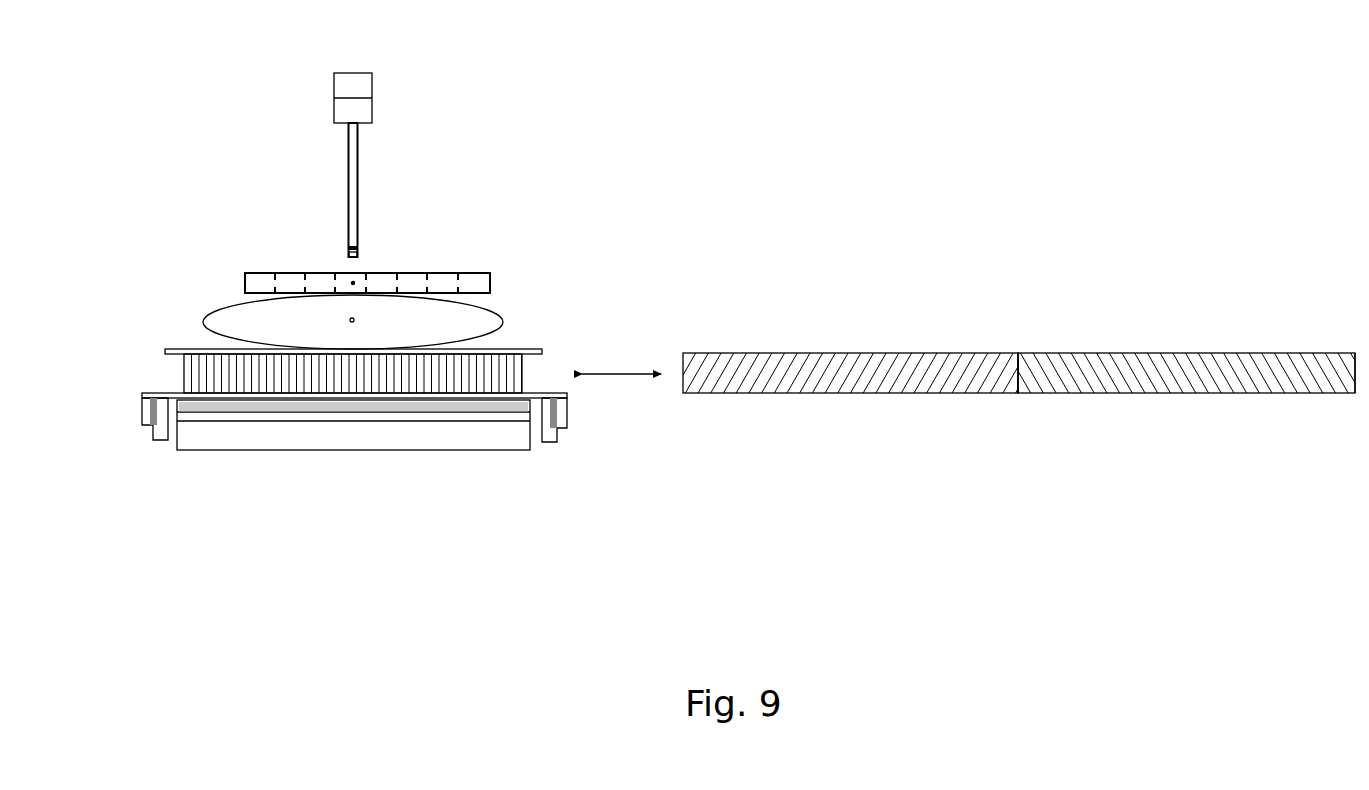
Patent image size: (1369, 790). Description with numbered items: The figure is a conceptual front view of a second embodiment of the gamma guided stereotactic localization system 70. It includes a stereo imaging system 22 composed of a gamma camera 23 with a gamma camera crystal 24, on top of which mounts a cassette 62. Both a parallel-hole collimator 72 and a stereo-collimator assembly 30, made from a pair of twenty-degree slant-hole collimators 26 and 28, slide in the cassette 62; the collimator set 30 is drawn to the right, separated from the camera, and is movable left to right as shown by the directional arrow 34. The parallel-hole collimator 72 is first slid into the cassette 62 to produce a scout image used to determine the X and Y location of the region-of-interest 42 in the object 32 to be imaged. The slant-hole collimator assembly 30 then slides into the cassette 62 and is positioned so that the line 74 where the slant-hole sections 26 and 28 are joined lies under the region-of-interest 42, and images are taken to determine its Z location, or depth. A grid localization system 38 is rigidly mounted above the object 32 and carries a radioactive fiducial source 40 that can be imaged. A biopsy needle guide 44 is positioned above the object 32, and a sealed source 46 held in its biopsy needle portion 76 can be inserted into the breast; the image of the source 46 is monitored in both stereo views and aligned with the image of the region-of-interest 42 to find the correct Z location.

The gamma guided stereotactic localization system 70 is at (146, 159).
The biopsy needle guide 44 is at (372, 93).
The biopsy needle portion 76 is at (358, 193).
The source 46 is at (348, 248).
The radioactive fiducial source 40 is at (353, 282).
The grid localization system 38 is at (245, 283).
The object 32 is at (492, 305).
The region-of-interest 42 is at (356, 318).
The parallel-hole collimator 72 is at (198, 372).
The cassette 62 is at (528, 397).
The stereo imaging system 22 is at (216, 466).
The gamma camera 23 is at (468, 437).
The gamma camera crystal 24 is at (347, 417).
The directional arrow 34 is at (618, 376).
The left side slant-hole collimator 26 is at (838, 377).
The right side slant-hole collimator 28 is at (1175, 378).
The line 74 is at (1018, 373).
The collimator set 30 is at (1275, 395).